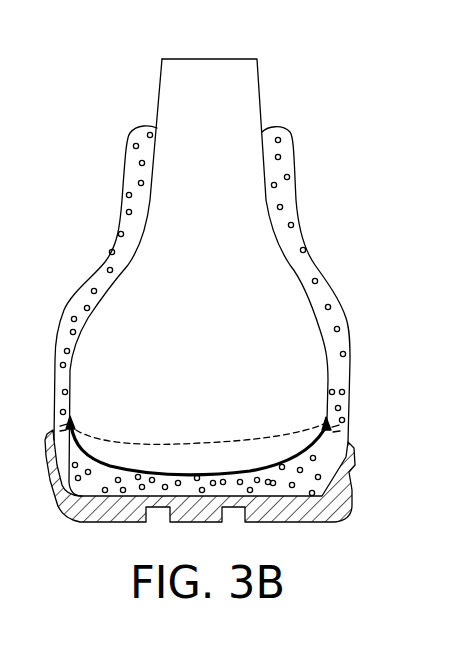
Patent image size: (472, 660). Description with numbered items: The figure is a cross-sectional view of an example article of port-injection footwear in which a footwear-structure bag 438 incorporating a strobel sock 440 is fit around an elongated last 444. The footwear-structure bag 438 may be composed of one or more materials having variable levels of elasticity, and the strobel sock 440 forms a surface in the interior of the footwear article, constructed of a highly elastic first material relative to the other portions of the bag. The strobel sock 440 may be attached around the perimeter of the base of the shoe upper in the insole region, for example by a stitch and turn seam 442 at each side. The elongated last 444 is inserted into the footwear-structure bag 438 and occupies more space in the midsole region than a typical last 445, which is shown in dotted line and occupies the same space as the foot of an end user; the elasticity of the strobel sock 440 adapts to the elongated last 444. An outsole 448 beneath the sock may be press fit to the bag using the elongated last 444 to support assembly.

The footwear-structure bag 438 is at (126, 180).
The strobel sock 440 is at (196, 471).
The stitch and turn seam 442 is at (73, 417).
The elongated last 444 is at (259, 80).
The typical last 445 is at (148, 441).
The hatched base 448 is at (52, 495).